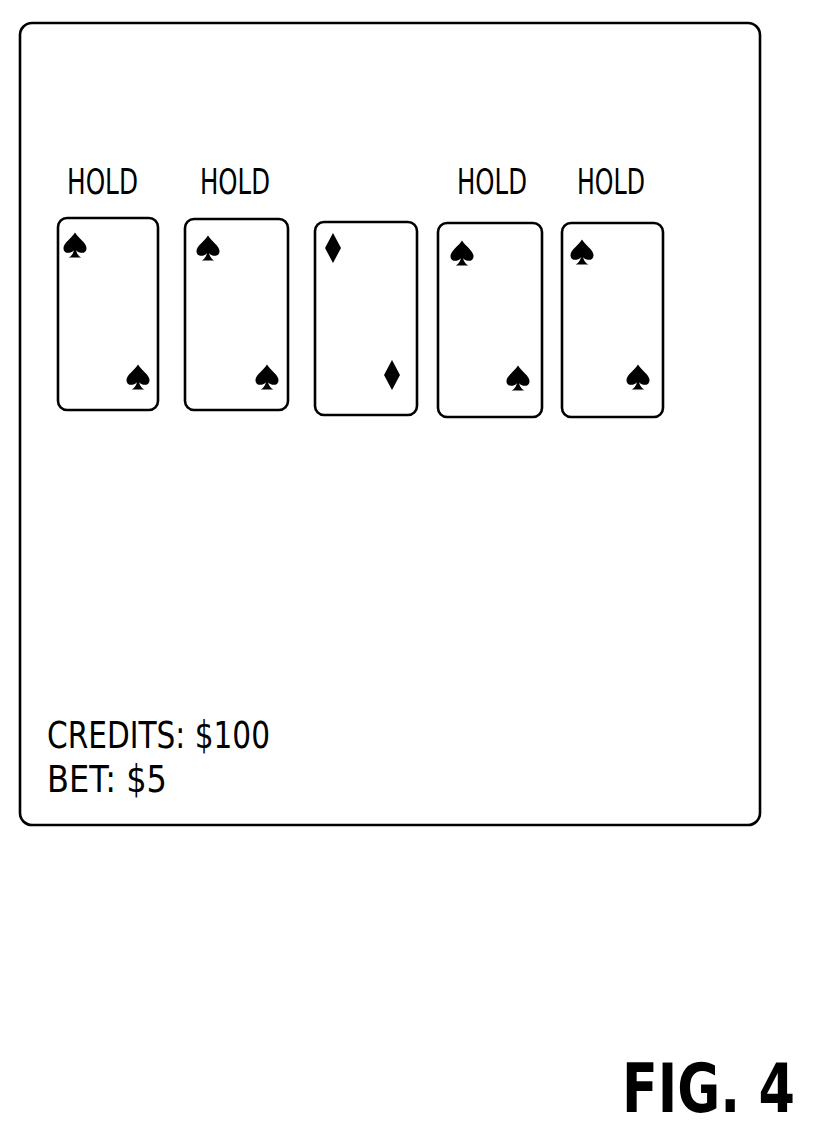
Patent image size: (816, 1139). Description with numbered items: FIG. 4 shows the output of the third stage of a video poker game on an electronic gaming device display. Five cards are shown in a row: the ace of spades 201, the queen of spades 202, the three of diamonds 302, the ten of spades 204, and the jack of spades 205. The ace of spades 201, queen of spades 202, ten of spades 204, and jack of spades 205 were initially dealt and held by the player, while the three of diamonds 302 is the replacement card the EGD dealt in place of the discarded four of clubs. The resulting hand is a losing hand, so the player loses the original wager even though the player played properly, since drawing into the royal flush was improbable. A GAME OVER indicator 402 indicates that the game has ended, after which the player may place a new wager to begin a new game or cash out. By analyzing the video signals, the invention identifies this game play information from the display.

The ace of spades 201 is at (108, 410).
The queen of spades 202 is at (247, 410).
The three of diamonds 302 is at (364, 415).
The ten of spades 204 is at (490, 417).
The jack of spades 205 is at (613, 417).
The GAME OVER indicator 402 is at (309, 596).